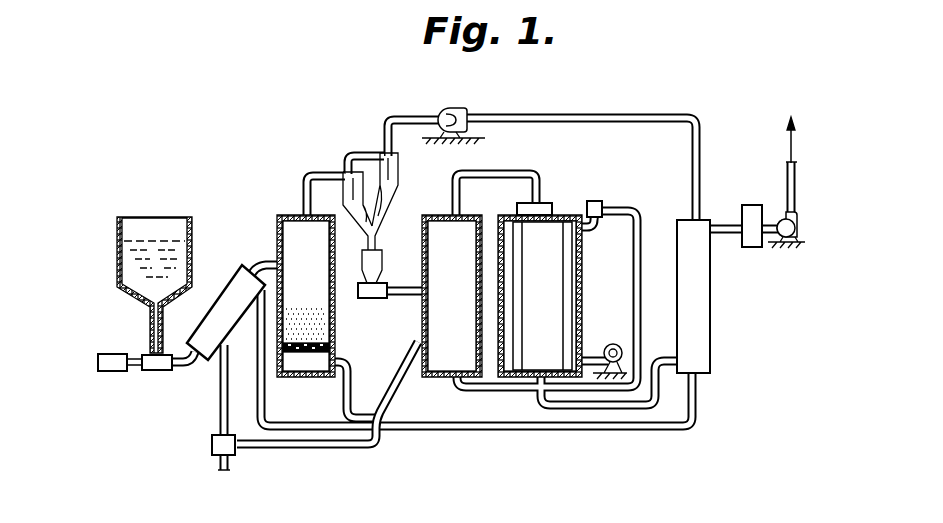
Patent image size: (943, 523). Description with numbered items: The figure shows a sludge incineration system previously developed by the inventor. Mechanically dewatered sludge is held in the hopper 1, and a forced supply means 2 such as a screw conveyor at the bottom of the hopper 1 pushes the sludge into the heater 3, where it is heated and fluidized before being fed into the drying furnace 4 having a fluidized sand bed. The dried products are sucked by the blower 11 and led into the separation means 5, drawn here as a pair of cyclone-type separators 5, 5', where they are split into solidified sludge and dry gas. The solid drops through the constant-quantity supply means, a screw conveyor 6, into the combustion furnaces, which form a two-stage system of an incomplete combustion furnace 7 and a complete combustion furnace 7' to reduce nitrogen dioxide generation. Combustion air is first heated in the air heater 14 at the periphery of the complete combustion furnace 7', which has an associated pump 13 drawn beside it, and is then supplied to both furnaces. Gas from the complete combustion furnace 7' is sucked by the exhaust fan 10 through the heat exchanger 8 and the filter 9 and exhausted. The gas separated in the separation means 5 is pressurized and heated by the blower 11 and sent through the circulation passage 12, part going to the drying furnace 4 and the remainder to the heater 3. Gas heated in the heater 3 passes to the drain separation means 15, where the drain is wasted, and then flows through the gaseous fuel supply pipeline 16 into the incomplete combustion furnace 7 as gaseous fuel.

The hopper 1 is at (176, 222).
The forced supply means 2 is at (143, 352).
The heater 3 is at (227, 276).
The drying furnace 4 is at (290, 226).
The separation means 5 is at (344, 188).
The second cyclone separator 5' is at (377, 181).
The screw conveyor 6 is at (369, 300).
The incomplete combustion furnace 7 is at (450, 278).
The complete combustion furnace 7' is at (527, 276).
The heat exchanger 8 is at (680, 235).
The filter 9 is at (746, 208).
The exhaust fan 10 is at (786, 178).
The blower 11 is at (452, 108).
The circulation passage 12 is at (588, 114).
The circulating pump 13 is at (616, 344).
The air heater 14 is at (583, 290).
The drain separation means 15 is at (212, 444).
The gaseous fuel supply pipeline 16 is at (352, 452).